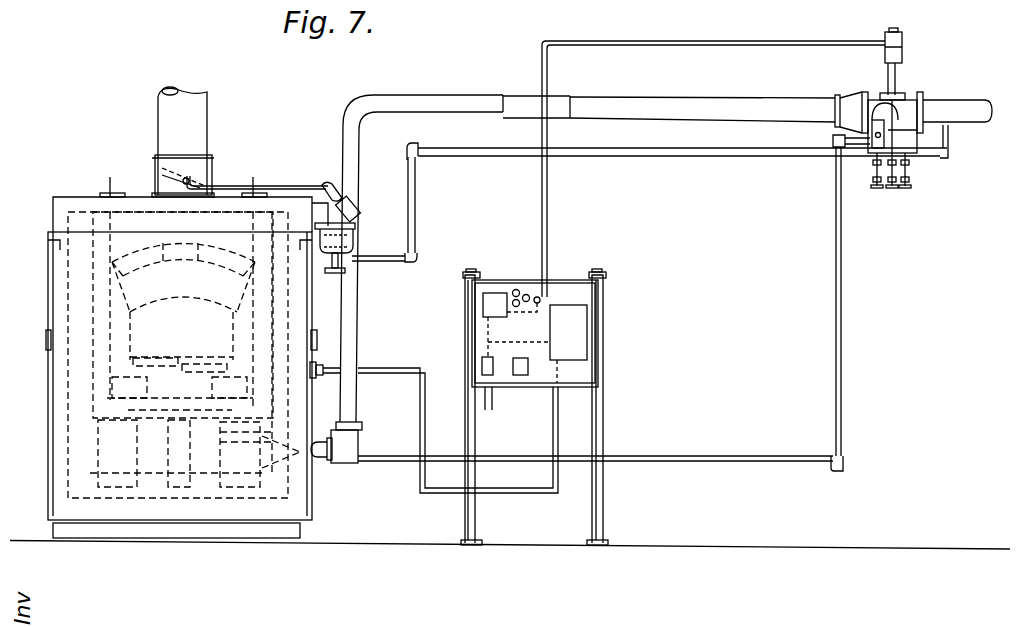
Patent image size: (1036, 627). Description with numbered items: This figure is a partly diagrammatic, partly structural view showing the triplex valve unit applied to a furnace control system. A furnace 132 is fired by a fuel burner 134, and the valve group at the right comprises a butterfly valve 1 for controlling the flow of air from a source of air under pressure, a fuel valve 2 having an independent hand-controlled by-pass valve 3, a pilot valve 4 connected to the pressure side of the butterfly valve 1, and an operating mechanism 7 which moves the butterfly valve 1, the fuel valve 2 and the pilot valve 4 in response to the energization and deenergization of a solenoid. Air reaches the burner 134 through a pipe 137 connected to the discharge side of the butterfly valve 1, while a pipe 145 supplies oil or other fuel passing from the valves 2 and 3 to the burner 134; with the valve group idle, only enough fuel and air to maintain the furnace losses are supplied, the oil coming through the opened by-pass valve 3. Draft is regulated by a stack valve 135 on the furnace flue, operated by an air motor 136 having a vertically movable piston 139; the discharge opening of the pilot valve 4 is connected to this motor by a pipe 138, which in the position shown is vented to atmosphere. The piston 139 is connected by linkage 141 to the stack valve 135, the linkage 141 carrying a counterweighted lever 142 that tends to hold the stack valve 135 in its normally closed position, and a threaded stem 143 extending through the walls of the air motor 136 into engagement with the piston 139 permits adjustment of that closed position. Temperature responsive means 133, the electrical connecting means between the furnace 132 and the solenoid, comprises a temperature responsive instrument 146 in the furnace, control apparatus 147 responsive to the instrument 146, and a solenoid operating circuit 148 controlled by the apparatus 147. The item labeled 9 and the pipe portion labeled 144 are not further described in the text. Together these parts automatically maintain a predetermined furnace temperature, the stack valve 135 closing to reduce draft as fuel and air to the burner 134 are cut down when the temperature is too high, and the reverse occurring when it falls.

The butterfly valve 1 is at (916, 113).
The fuel valve 2 is at (876, 152).
The by-pass valve 3 is at (880, 158).
The pilot valve 4 is at (908, 158).
The operating mechanism 7 is at (896, 88).
The valve bonnet 9 is at (903, 97).
The furnace 132 is at (183, 307).
The temperature responsive means 133 is at (466, 325).
The fuel burner 134 is at (354, 442).
The stack valve 135 is at (165, 168).
The air motor 136 is at (355, 232).
The pipe 137 is at (489, 249).
The pipe 138 is at (690, 153).
The piston 139 is at (354, 244).
The linkage 141 is at (336, 200).
The counterweighted lever 142 is at (358, 212).
The threaded stem 143 is at (346, 271).
The main air pipe 144 is at (731, 107).
The pipe 145 is at (687, 463).
The temperature responsive instrument 146 is at (196, 366).
The control apparatus 147 is at (534, 350).
The solenoid operating circuit 148 is at (548, 213).